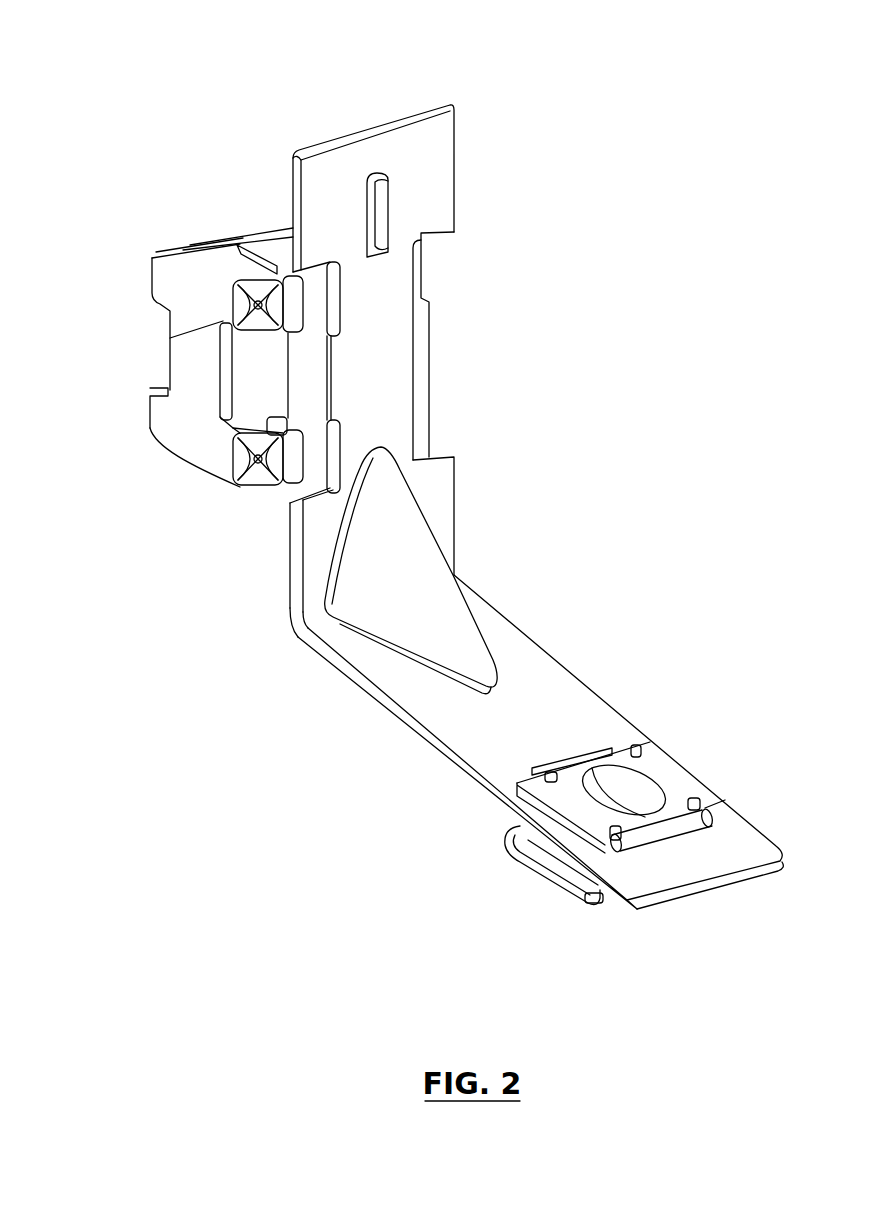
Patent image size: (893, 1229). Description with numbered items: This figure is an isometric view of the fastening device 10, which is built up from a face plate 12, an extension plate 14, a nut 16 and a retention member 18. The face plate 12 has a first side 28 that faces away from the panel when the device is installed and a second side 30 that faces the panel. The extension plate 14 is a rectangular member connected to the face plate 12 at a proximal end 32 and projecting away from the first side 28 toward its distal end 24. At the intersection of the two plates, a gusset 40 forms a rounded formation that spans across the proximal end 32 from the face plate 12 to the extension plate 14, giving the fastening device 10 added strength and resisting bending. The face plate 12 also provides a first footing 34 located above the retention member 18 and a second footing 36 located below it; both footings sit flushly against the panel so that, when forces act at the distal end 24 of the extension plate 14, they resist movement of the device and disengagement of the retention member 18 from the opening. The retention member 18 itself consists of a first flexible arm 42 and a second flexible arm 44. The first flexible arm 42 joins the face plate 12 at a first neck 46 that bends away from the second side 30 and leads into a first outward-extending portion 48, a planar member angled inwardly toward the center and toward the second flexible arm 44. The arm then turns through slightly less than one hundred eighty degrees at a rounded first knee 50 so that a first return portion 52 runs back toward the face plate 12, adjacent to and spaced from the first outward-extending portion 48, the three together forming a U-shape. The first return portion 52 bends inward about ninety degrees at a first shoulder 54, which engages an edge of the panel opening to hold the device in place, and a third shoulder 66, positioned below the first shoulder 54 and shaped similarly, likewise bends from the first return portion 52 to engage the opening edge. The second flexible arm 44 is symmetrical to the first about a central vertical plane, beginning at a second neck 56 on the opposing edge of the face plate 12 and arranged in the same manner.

The fastening device 10 is at (407, 82).
The face plate 12 is at (395, 327).
The extension plate 14 is at (565, 702).
The nut 16 is at (665, 778).
The retention member 18 is at (200, 383).
The distal end 24 is at (703, 867).
The first side 28 is at (432, 150).
The second side 30 is at (330, 123).
The proximal end 32 is at (325, 630).
The first footing 34 is at (413, 205).
The second footing 36 is at (437, 507).
The gusset 40 is at (423, 555).
The first flexible arm 42 is at (200, 290).
The second flexible arm 44 is at (263, 248).
The first neck 46 is at (245, 430).
The first outward-extending portion 48 is at (252, 262).
The first knee 50 is at (160, 276).
The first return portion 52 is at (215, 267).
The first shoulder 54 is at (228, 320).
The second neck 56 is at (432, 346).
The third shoulder 66 is at (290, 470).